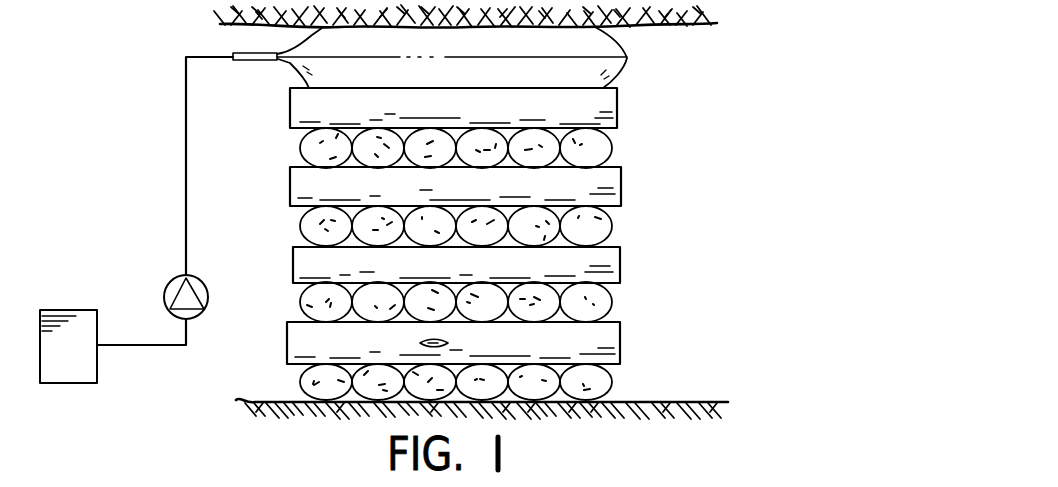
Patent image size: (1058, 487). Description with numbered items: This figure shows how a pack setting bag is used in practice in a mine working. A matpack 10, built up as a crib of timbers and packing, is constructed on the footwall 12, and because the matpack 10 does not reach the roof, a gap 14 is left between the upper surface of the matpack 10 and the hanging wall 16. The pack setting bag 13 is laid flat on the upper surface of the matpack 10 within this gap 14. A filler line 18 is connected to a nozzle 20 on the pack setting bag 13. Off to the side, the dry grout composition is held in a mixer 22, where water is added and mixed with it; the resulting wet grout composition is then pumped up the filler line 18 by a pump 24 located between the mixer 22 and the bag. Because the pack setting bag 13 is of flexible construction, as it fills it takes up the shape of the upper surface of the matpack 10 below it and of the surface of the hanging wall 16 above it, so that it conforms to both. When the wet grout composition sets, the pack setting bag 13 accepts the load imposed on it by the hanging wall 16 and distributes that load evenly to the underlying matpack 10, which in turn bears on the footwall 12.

The matpack 10 is at (662, 189).
The footwall 12 is at (697, 401).
The pack setting bag 13 is at (623, 68).
The gap 14 is at (718, 28).
The hanging wall 16 is at (233, 26).
The filler line 18 is at (186, 194).
The nozzle 20 is at (250, 62).
The mixer 22 is at (70, 310).
The pump 24 is at (201, 313).